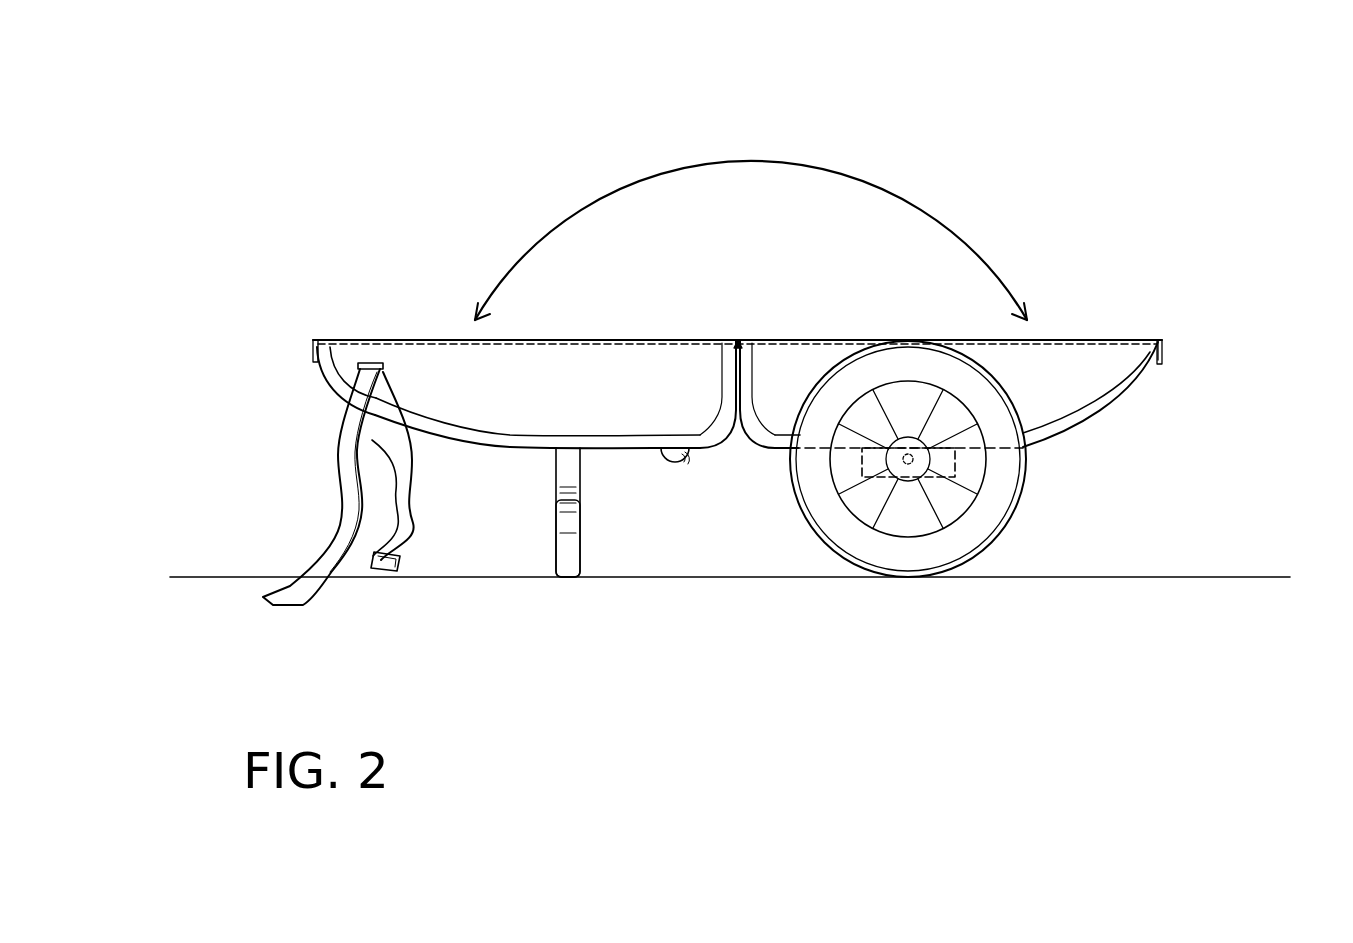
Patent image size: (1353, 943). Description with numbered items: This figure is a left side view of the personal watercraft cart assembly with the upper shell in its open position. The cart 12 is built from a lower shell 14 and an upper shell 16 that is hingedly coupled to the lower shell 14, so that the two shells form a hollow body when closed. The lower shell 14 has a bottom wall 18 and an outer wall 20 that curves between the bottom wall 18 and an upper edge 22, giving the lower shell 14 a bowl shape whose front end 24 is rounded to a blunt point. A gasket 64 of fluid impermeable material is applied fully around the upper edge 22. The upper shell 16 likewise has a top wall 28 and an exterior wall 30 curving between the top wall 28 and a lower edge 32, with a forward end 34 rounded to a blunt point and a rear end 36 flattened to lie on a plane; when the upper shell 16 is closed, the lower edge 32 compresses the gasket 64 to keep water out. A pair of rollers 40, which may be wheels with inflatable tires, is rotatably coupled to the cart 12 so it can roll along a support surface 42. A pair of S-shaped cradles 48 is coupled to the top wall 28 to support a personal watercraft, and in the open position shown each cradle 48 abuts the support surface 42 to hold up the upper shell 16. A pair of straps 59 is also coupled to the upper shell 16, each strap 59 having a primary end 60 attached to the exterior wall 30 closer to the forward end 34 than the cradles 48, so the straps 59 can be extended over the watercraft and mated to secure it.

The cart 12 is at (1123, 292).
The lower shell 14 is at (1137, 402).
The upper shell 16 is at (327, 392).
The bottom wall 18 is at (843, 452).
The outer wall 20 is at (1077, 387).
The upper edge 22 is at (1087, 338).
The front end 24 is at (1147, 372).
The top wall 28 is at (633, 448).
The exterior wall 30 is at (442, 382).
The lower edge 32 is at (555, 340).
The forward end 34 is at (327, 367).
The rear end 36 is at (740, 363).
The rollers 40 is at (1003, 513).
The support surface 42 is at (1253, 577).
The cradles 48 is at (553, 531).
The straps 59 is at (383, 523).
The primary end 60 is at (375, 362).
The gasket 64 is at (677, 341).